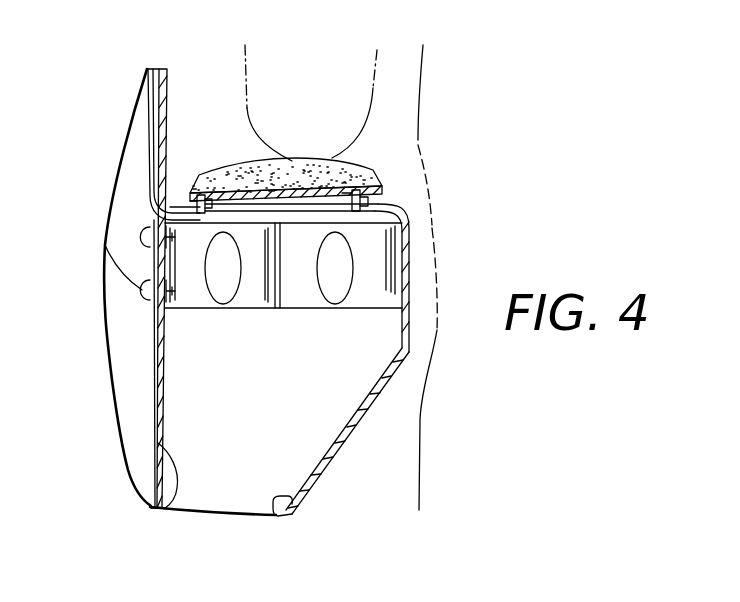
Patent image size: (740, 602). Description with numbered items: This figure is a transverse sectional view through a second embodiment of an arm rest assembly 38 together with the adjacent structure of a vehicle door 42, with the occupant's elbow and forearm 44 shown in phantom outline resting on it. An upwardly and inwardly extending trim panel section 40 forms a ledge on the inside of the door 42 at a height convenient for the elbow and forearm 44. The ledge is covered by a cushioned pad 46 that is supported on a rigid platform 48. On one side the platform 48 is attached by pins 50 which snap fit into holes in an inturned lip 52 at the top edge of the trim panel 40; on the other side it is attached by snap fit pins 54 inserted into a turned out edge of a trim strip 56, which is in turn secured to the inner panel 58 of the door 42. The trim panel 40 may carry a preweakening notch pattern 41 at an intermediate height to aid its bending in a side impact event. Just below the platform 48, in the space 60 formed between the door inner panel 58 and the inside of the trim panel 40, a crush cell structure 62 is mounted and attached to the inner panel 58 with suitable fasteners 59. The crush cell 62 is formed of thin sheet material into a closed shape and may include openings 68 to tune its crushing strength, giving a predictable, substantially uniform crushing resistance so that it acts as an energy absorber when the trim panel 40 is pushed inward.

The arm rest assembly 38 is at (356, 464).
The trim panel section 40 is at (362, 421).
The preweakening notch pattern 41 is at (277, 508).
The vehicle door 42 is at (118, 414).
The elbow and forearm 44 is at (378, 66).
The cushioned pad 46 is at (367, 173).
The rigid platform 48 is at (256, 204).
The pins 50 is at (363, 226).
The inturned lip 52 is at (397, 200).
The snap fit pins 54 is at (148, 207).
The trim strip 56 is at (168, 96).
The inner panel 58 is at (164, 509).
The fasteners 59 is at (140, 237).
The space 60 is at (329, 414).
The crush cell structure 62 is at (225, 311).
The apertures 68 is at (213, 286).